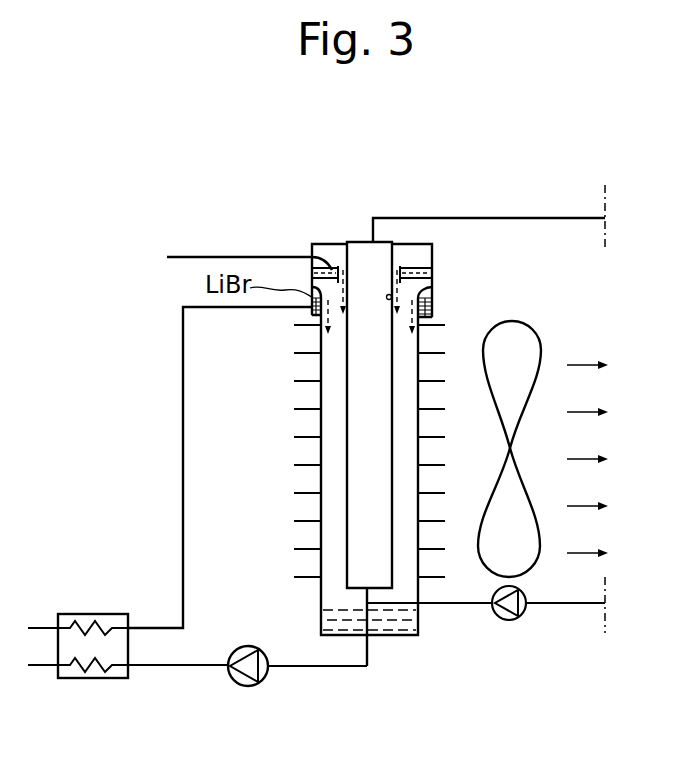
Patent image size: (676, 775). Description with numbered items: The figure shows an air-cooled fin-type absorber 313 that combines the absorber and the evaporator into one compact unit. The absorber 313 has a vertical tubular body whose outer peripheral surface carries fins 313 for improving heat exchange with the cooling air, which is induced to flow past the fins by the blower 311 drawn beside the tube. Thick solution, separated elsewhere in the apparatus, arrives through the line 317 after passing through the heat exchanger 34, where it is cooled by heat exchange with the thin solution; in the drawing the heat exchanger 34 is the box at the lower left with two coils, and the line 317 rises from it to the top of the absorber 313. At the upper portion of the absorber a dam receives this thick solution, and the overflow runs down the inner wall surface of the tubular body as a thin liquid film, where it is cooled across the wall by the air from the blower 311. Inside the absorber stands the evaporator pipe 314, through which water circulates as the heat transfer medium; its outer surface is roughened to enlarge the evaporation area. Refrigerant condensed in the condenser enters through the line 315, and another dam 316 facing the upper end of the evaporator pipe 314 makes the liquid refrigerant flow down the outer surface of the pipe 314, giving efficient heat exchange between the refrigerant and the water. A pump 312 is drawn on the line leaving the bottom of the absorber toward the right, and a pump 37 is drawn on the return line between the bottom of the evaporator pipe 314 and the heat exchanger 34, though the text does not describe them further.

The blower 311 is at (537, 330).
The pump 312 is at (513, 620).
The air-cooled fin-type absorber 313 is at (300, 409).
The evaporator pipe 314 is at (392, 297).
The line 315 is at (227, 256).
The dam 316 is at (432, 268).
The line 317 is at (181, 410).
The heat exchanger 34 is at (115, 680).
The pump 37 is at (236, 684).